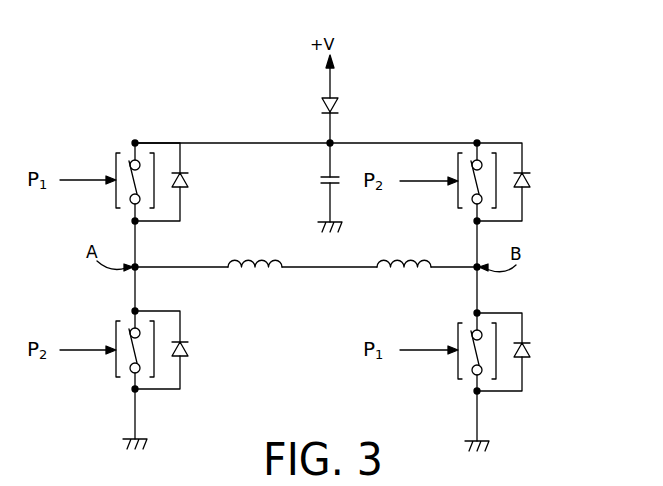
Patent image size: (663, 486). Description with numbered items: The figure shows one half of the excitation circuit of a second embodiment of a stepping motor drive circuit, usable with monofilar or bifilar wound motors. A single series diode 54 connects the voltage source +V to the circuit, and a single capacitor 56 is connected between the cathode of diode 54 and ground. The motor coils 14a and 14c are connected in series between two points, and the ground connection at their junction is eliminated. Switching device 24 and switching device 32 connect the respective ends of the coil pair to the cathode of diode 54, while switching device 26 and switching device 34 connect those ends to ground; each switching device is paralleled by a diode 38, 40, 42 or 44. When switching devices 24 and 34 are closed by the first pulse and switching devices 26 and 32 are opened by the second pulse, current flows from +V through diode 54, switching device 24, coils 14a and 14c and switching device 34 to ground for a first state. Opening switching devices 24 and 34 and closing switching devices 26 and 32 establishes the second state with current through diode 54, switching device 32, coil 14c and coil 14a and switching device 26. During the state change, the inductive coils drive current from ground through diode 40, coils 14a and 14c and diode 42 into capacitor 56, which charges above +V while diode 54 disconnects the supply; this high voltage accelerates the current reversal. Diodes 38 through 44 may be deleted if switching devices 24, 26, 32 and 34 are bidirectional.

The switching device 24 is at (115, 153).
The switching device 26 is at (115, 322).
The switching device 32 is at (457, 197).
The switching device 34 is at (457, 323).
The diode 38 is at (189, 180).
The diode 40 is at (189, 345).
The diode 42 is at (531, 180).
The diode 44 is at (531, 347).
The diode 54 is at (339, 106).
The capacitor 56 is at (323, 177).
The coil 14a is at (284, 261).
The coil 14c is at (418, 261).